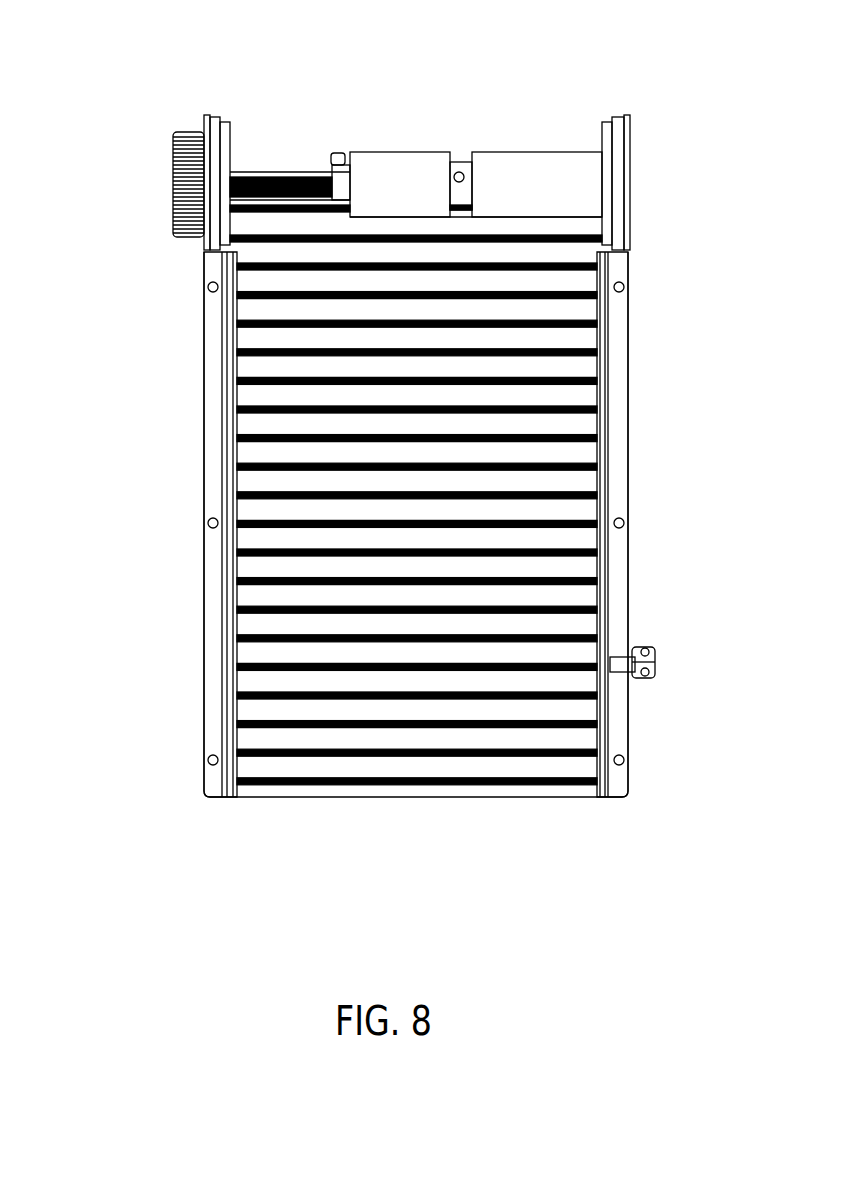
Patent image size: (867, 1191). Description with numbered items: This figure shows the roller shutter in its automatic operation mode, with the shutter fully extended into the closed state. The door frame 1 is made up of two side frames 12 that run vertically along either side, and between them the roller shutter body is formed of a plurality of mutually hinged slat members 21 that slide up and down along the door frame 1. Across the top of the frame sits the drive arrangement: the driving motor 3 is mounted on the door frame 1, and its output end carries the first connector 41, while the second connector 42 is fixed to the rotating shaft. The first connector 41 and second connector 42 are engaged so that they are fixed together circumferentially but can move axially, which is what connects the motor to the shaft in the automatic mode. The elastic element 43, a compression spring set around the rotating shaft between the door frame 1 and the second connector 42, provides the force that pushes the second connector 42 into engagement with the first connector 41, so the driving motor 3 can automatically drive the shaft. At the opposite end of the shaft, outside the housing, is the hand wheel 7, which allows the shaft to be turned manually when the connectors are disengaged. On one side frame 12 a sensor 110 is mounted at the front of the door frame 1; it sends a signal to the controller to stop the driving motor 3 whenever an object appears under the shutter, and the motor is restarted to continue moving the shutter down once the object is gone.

The door frame 1 is at (190, 571).
The driving motor 3 is at (543, 175).
The hand wheel 7 is at (179, 132).
The side frames 12 is at (205, 378).
The slat members 21 is at (383, 700).
The first connector 41 is at (460, 162).
The second connector 42 is at (390, 180).
The elastic element 43 is at (272, 172).
The sensor 110 is at (648, 674).